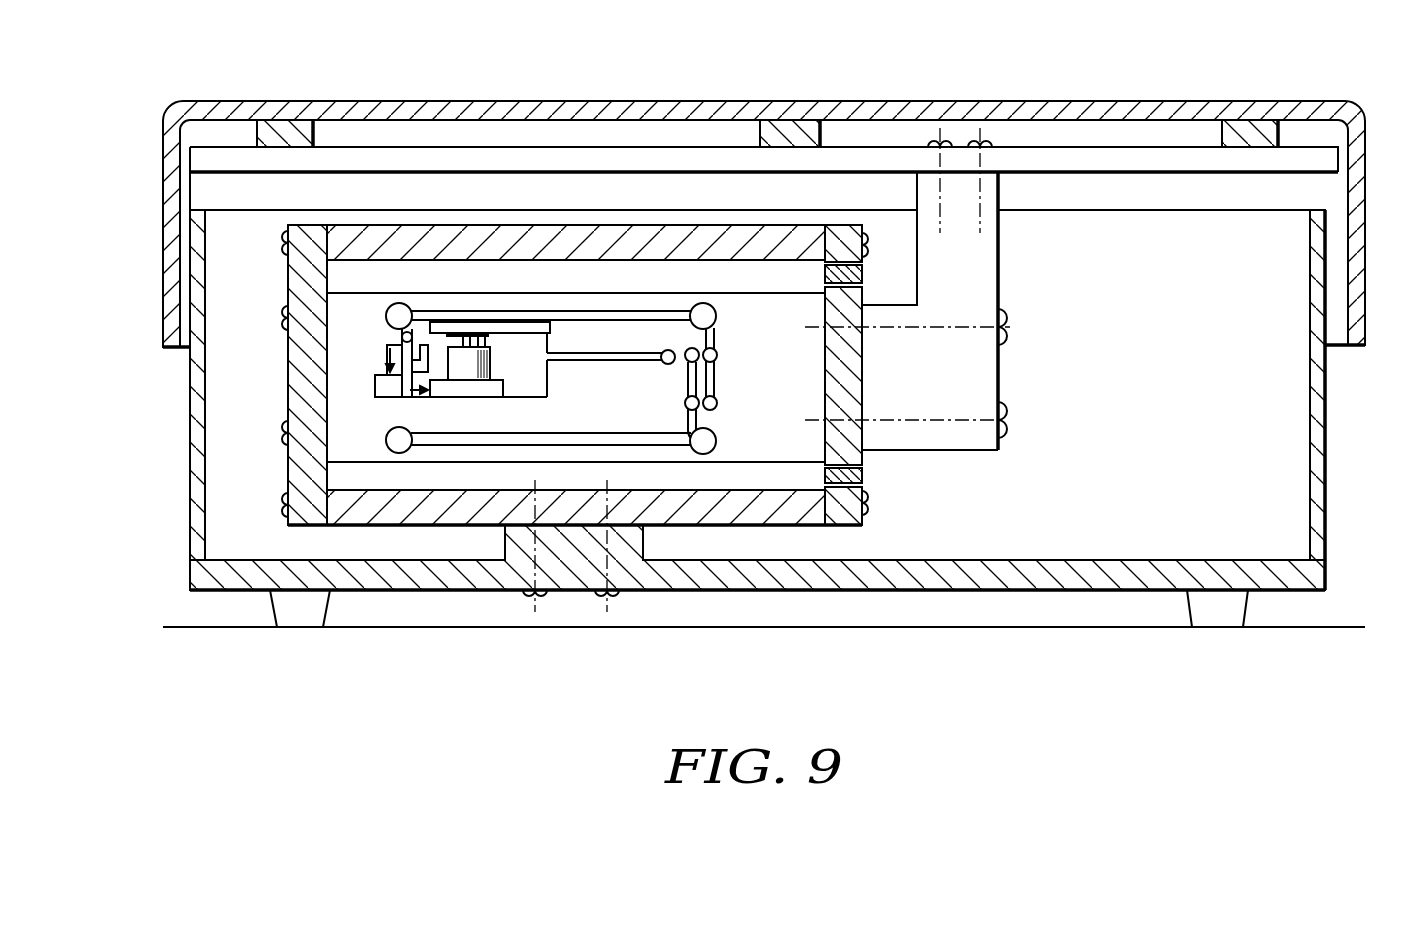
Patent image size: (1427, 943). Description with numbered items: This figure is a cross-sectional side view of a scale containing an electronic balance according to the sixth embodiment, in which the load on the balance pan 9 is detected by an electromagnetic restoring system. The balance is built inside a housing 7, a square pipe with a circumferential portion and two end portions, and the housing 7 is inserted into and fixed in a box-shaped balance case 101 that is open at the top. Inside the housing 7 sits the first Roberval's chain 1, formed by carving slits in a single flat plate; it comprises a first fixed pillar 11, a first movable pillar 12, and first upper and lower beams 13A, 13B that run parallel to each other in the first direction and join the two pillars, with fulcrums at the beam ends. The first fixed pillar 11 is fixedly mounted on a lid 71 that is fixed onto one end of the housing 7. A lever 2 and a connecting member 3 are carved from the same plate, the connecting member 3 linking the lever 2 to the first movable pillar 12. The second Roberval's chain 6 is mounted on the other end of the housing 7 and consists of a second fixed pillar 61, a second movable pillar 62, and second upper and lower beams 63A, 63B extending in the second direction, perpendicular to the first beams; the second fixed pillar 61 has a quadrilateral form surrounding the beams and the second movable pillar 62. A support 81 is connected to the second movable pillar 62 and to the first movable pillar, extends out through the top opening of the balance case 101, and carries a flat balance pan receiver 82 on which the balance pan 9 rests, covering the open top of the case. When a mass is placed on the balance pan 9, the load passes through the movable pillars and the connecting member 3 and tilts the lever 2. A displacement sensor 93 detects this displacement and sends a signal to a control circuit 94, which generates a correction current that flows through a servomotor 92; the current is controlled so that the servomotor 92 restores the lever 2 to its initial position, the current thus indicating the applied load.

The first Roberval's chain 1 is at (400, 278).
The lever 2 is at (583, 337).
The connecting member 3 is at (703, 387).
The second Roberval's chain 6 is at (878, 238).
The housing 7 is at (805, 523).
The balance pan 9 is at (1117, 108).
The first fixed pillar 11 is at (337, 400).
The first movable pillar 12 is at (748, 413).
The first upper beam 13A is at (640, 297).
The first lower beam 13B is at (662, 453).
The second fixed pillar 61 is at (848, 505).
The second movable pillar 62 is at (855, 370).
The second upper beam 63A is at (860, 280).
The second lower beam 63B is at (865, 475).
The lid 71 is at (288, 353).
The support 81 is at (977, 276).
The balance pan receiver 82 is at (1195, 158).
The servomotor 92 is at (482, 353).
The displacement sensor 93 is at (390, 337).
The control circuit 94 is at (386, 392).
The balance case 101 is at (1325, 487).